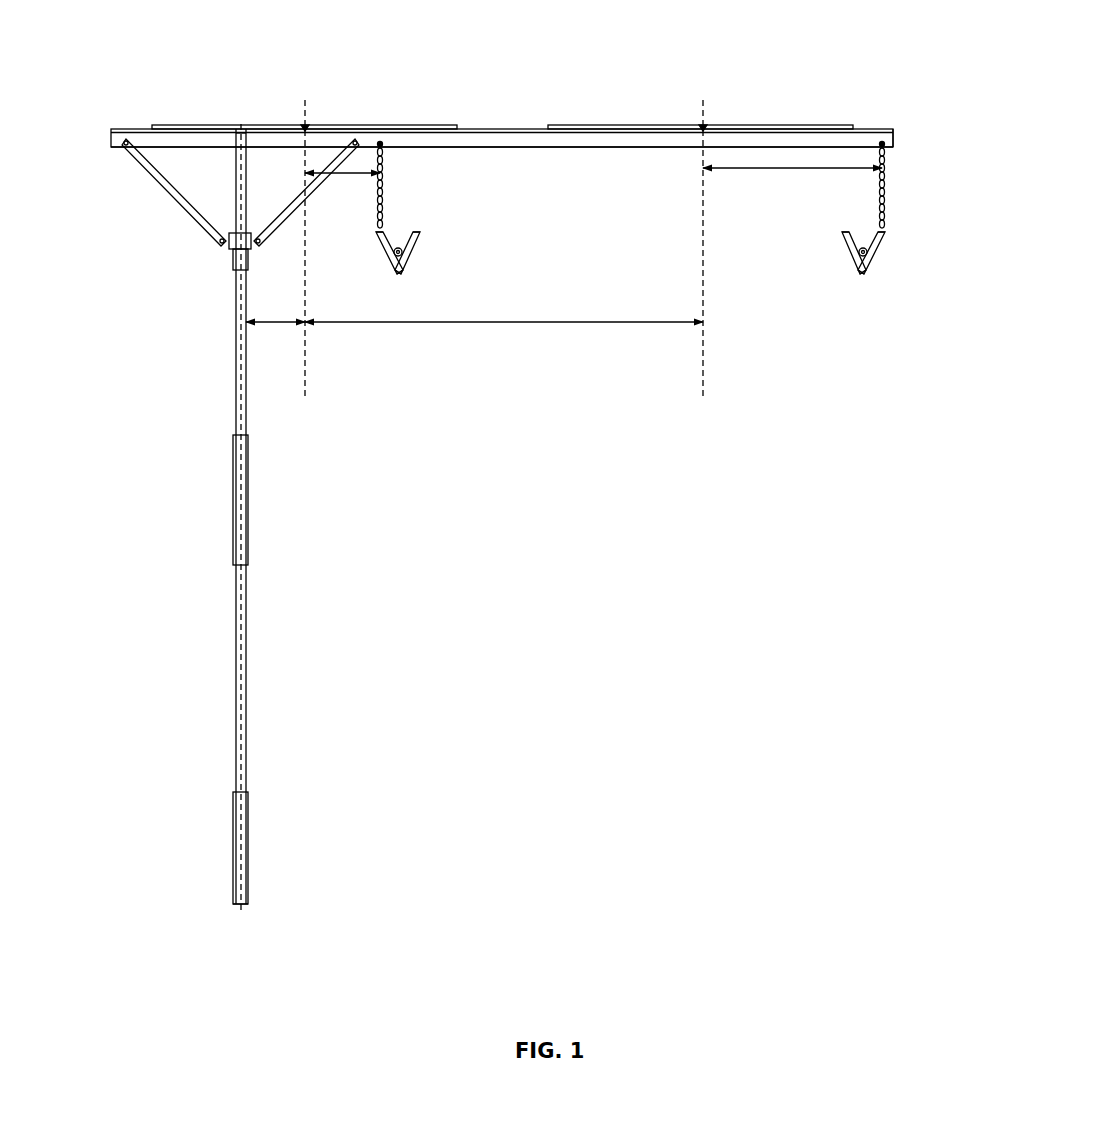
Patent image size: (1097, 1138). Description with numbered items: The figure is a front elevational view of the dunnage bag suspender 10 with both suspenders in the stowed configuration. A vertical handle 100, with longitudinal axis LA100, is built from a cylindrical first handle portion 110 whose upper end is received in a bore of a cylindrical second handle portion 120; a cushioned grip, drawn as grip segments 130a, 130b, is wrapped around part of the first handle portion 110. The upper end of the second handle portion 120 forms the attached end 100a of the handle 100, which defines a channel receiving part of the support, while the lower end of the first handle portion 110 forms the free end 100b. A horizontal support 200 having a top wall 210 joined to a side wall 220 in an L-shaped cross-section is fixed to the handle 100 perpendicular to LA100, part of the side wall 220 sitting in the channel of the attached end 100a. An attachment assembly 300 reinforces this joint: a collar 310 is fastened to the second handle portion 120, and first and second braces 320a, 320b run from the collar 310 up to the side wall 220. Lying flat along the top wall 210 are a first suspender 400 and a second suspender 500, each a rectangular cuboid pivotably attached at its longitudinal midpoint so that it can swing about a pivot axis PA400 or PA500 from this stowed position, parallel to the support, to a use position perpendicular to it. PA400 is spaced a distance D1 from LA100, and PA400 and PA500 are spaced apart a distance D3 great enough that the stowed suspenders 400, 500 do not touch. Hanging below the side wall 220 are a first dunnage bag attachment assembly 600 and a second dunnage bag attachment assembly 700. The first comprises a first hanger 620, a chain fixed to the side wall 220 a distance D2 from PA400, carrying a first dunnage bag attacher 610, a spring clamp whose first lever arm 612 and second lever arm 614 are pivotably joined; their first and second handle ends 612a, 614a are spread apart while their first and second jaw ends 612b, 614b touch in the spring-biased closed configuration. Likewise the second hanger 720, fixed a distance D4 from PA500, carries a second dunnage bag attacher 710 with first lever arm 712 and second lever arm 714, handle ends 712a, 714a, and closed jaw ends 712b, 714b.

The dunnage bag suspender 10 is at (822, 40).
The handle 100 is at (193, 517).
The attached end of the handle 100a is at (235, 150).
The free end of the handle 100b is at (247, 902).
The first handle portion 110 is at (236, 730).
The second handle portion 120 is at (230, 237).
The upper pole sleeve 130a is at (248, 492).
The lower pole sleeve 130b is at (248, 838).
The longitudinal axis of the handle LA100 is at (236, 892).
The support 200 is at (505, 127).
The top wall 210 is at (879, 130).
The side wall 220 is at (571, 140).
The attachment assembly 300 is at (209, 224).
The collar 310 is at (252, 239).
The first brace 320a is at (168, 178).
The second brace 320b is at (277, 248).
The first suspender 400 is at (361, 125).
The second suspender 500 is at (613, 125).
The first dunnage bag attachment assembly 600 is at (432, 233).
The first dunnage bag attacher 610 is at (407, 264).
The first lever arm 612 is at (360, 277).
The first handle end 612a is at (376, 231).
The first jaw end 612b is at (392, 262).
The second lever arm 614 is at (442, 257).
The second handle end 614a is at (414, 233).
The second jaw end 614b is at (406, 272).
The first hanger 620 is at (383, 196).
The second dunnage bag attachment assembly 700 is at (834, 256).
The second dunnage bag attacher 710 is at (834, 286).
The first lever arm 712 is at (790, 274).
The first handle end 712a is at (843, 233).
The first jaw end 712b is at (858, 265).
The second lever arm 714 is at (908, 286).
The second handle end 714a is at (880, 244).
The second jaw end 714b is at (885, 319).
The second hanger 720 is at (879, 177).
The pivot axis of the first suspender PA400 is at (305, 368).
The pivot axis of the second suspender PA500 is at (703, 377).
The distance D1 is at (270, 326).
The distance D2 is at (341, 176).
The distance D3 is at (496, 323).
The distance D4 is at (766, 170).